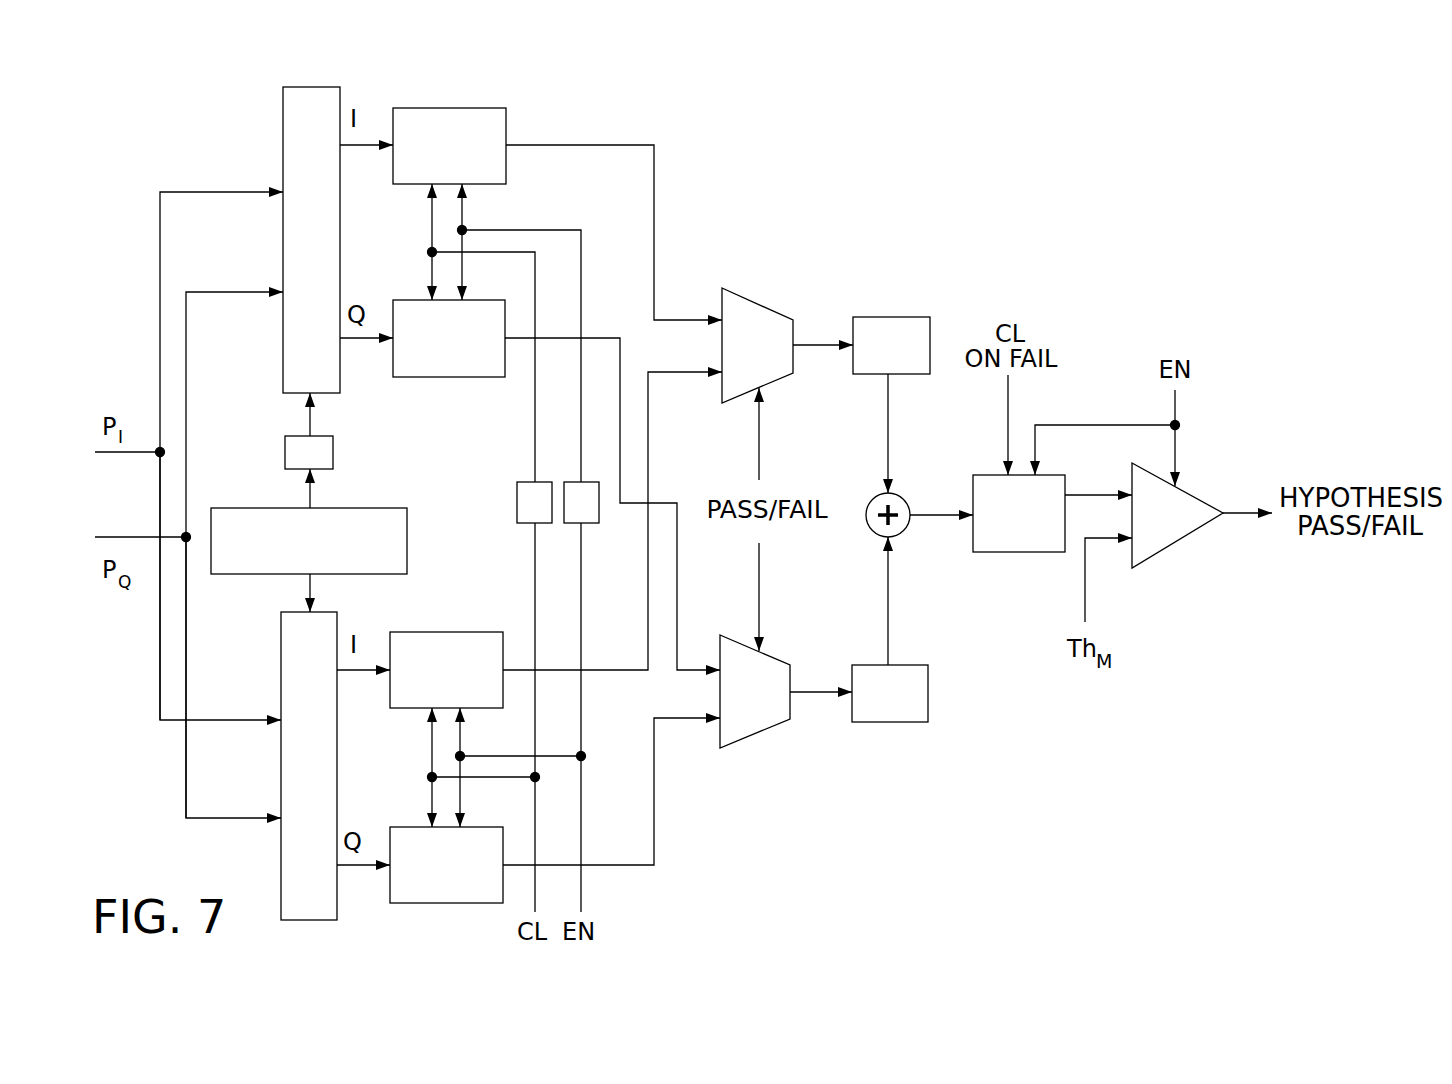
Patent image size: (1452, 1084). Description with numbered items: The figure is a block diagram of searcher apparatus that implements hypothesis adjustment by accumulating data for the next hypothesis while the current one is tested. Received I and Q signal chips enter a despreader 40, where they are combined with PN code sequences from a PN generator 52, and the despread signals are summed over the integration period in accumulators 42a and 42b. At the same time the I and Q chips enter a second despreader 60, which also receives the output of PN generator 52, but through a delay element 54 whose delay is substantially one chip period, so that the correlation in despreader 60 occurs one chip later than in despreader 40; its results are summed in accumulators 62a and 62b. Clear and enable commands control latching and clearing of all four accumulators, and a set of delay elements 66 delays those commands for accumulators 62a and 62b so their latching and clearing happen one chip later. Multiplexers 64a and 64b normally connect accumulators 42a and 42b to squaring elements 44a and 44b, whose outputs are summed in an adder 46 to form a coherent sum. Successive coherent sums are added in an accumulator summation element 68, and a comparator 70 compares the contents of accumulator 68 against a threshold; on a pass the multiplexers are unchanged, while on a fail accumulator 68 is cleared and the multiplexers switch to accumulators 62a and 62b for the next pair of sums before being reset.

The despreader 40 is at (313, 920).
The accumulator 42a is at (452, 632).
The accumulator 42b is at (425, 903).
The squaring element 44a is at (903, 317).
The squaring element 44b is at (907, 722).
The adder 46 is at (903, 532).
The PN generator 52 is at (365, 574).
The delay element 54 is at (328, 469).
The despreader 60 is at (328, 87).
The accumulator 62a is at (457, 108).
The accumulator 62b is at (452, 377).
The multiplexer 64a is at (767, 303).
The multiplexer 64b is at (768, 728).
The delay elements 66 is at (573, 523).
The accumulator summation element 68 is at (1000, 552).
The comparator 70 is at (1157, 553).